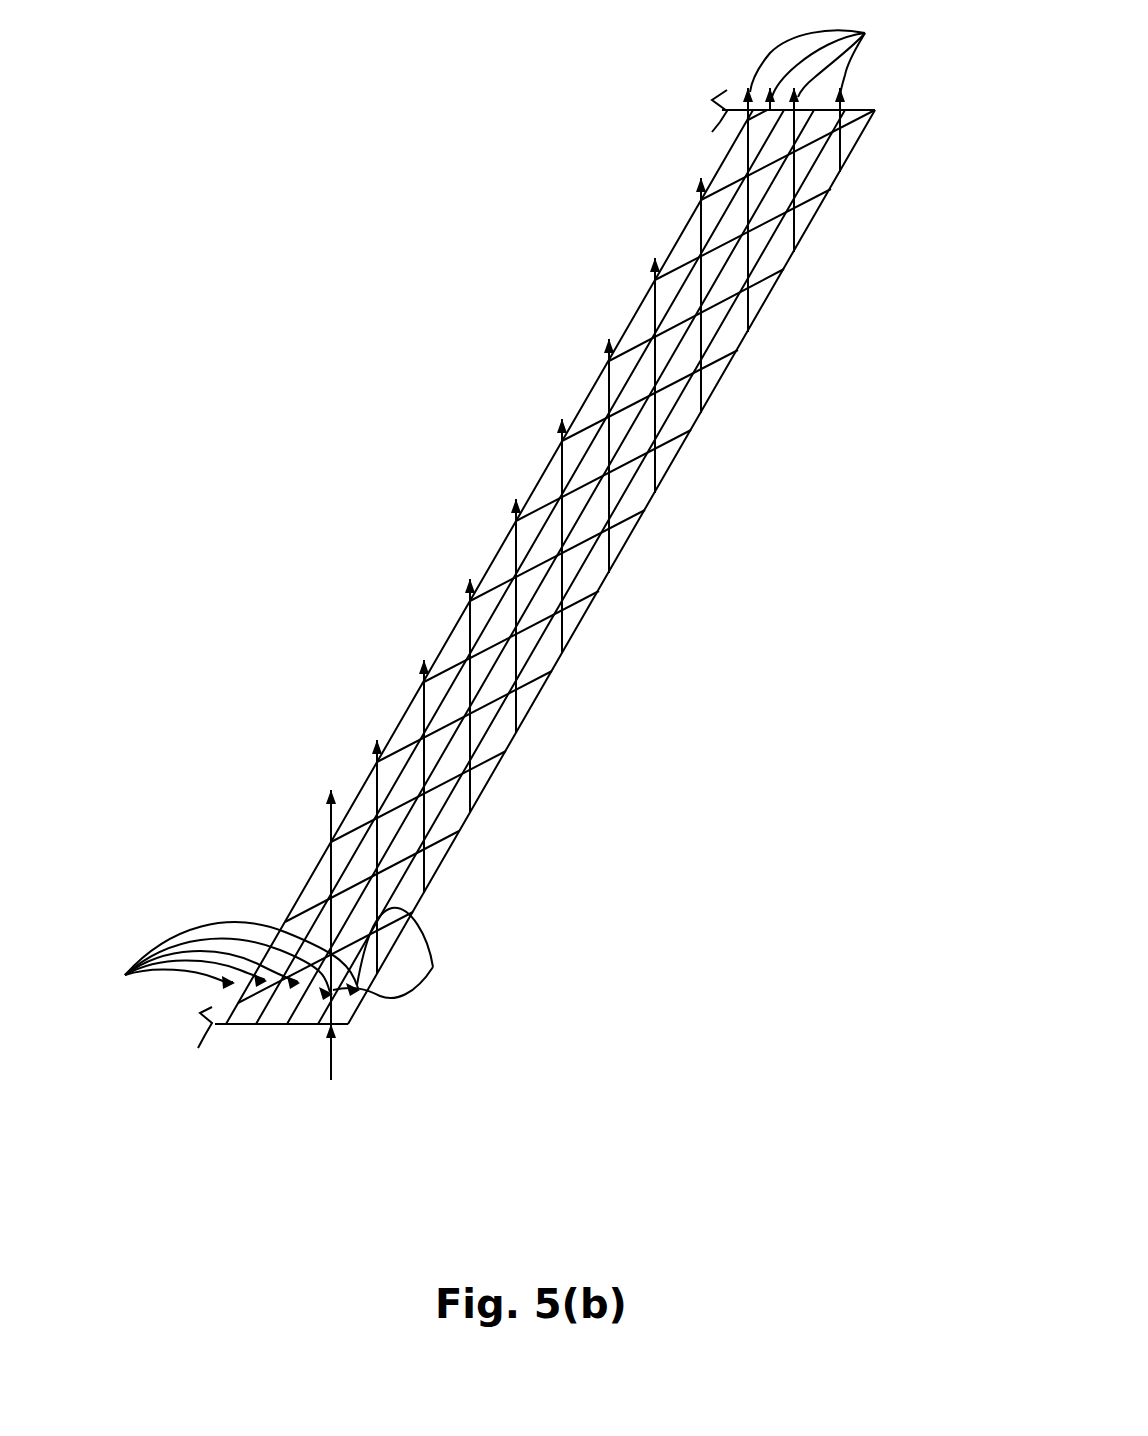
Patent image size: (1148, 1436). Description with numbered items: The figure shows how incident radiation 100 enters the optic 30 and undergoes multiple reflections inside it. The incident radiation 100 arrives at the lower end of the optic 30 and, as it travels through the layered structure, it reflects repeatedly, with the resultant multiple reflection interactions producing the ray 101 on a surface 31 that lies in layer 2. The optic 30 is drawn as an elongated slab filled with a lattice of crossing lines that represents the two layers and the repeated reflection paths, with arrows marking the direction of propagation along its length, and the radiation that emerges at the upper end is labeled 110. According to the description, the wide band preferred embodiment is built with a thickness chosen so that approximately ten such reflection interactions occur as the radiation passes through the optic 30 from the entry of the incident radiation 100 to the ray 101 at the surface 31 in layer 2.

The optic 30 is at (692, 467).
The layer 2 is at (317, 933).
The incident radiation 100 is at (327, 1067).
The surface 31 is at (222, 961).
The ray 101 is at (415, 953).
The outlet flow 110 is at (840, 59).